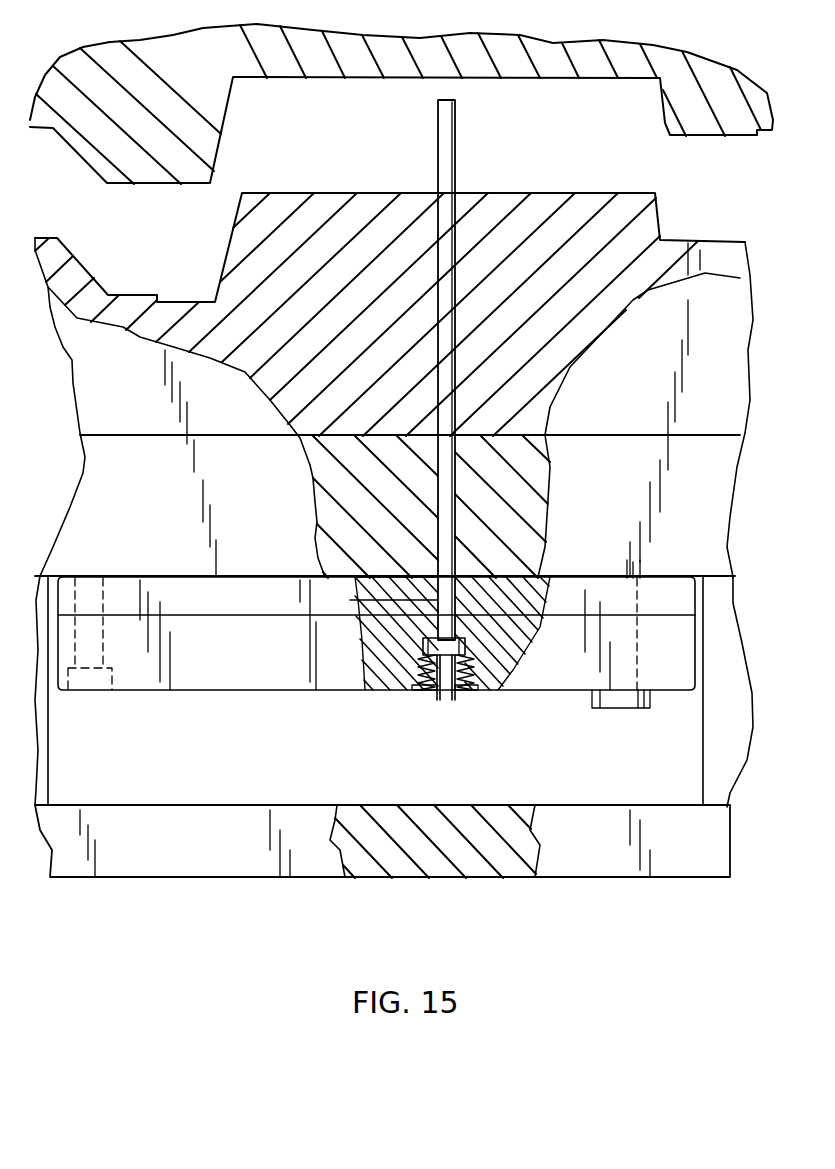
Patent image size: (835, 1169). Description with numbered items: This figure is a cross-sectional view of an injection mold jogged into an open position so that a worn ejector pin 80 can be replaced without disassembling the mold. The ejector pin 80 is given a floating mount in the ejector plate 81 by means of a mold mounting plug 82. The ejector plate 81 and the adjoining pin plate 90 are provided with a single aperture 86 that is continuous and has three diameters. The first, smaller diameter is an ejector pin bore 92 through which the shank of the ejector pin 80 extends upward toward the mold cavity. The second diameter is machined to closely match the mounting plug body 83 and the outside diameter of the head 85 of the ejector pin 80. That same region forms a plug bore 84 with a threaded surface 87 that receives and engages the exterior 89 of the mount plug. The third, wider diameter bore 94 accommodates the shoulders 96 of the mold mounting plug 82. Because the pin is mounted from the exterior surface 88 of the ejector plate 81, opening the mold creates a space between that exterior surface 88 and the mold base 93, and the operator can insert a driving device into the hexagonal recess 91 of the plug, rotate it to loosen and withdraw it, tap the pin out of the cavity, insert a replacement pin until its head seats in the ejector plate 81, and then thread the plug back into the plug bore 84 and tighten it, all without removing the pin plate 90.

The ejector pin 80 is at (430, 634).
The ejector plate 81 is at (672, 645).
The mold mounting plug 82 is at (462, 690).
The mounting plug body 83 is at (418, 672).
The plug bore 84 is at (470, 664).
The head 85 is at (424, 650).
The single aperture 86 is at (457, 518).
The threaded surface 87 is at (368, 683).
The exterior surface 88 is at (183, 690).
The exterior 89 is at (455, 697).
The pin plate 90 is at (675, 593).
The hexagonal recess 91 is at (437, 697).
The ejector pin bore 92 is at (437, 275).
The mold base 93 is at (595, 855).
The third, wider diameter bore 94 is at (472, 688).
The shoulders 96 is at (418, 690).